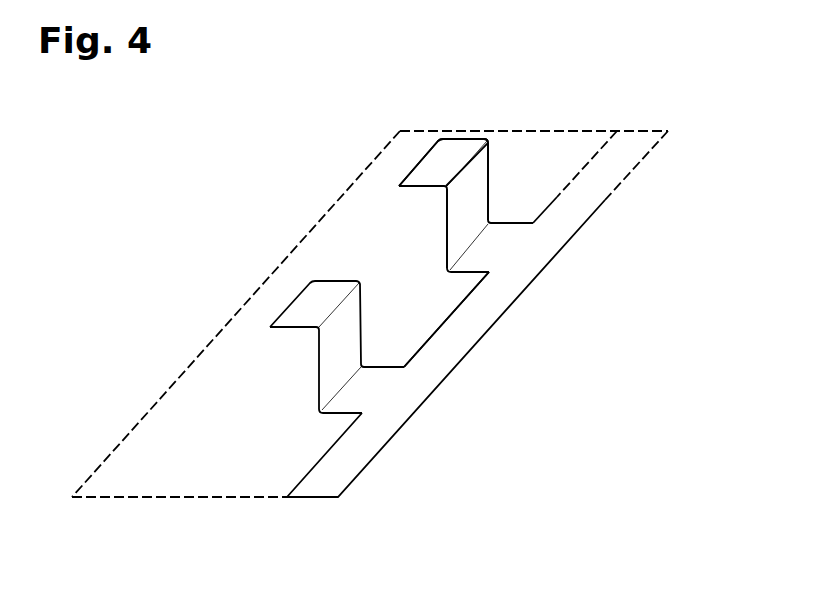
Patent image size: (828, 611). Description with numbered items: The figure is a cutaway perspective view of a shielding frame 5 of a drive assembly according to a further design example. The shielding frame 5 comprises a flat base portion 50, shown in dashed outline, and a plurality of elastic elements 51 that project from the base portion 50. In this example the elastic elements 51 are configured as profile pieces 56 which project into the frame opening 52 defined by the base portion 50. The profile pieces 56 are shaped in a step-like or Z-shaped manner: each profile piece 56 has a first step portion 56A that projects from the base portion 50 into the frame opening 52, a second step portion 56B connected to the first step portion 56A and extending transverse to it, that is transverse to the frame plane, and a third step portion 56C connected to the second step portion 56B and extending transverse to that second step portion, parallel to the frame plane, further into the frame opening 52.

The shielding frame 5 is at (232, 141).
The base portion 50 is at (460, 335).
The elastic elements 51 is at (400, 153).
The frame opening 52 is at (462, 302).
The profile pieces 56 is at (290, 327).
The first step portion 56A is at (493, 250).
The second step portion 56B is at (476, 193).
The third step portion 56C is at (444, 158).